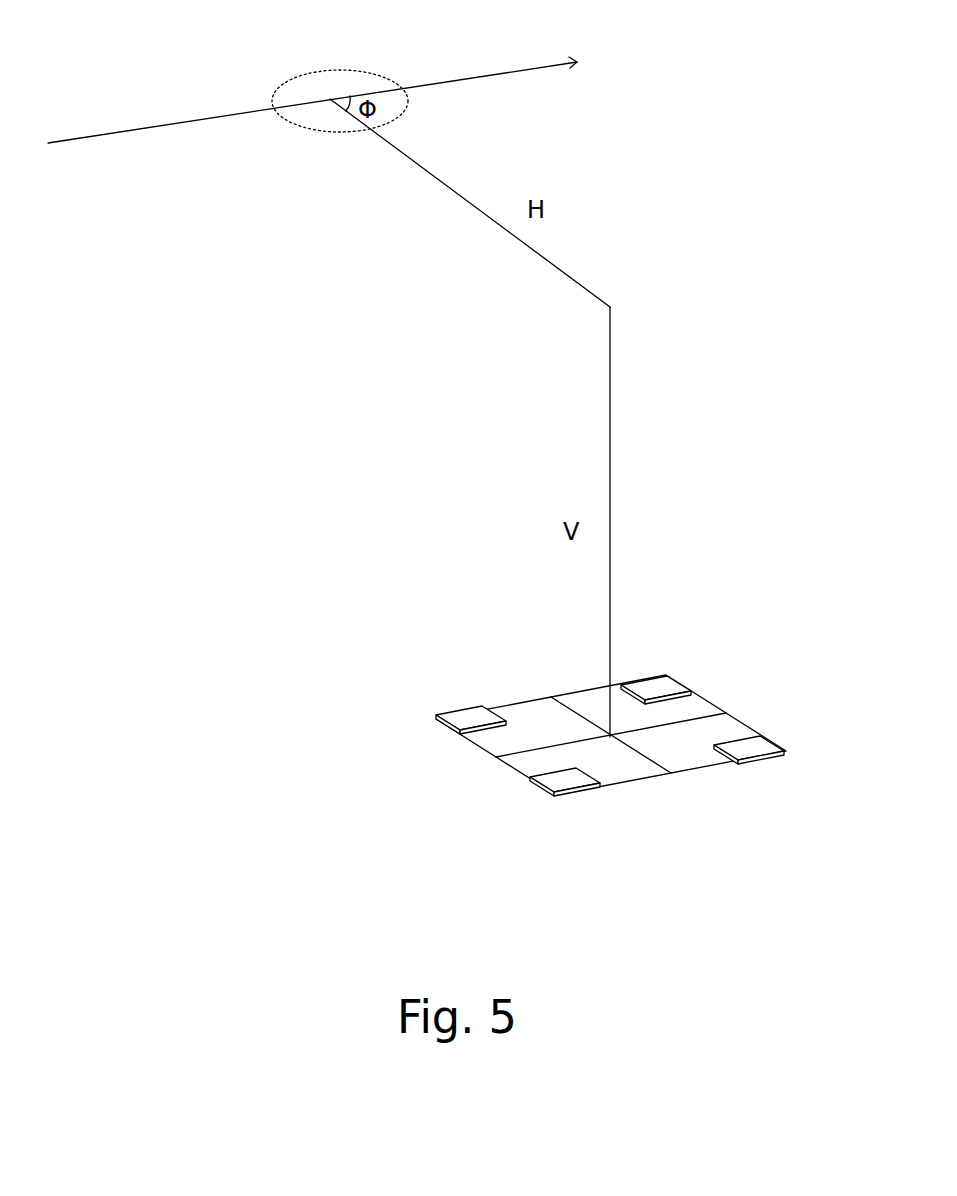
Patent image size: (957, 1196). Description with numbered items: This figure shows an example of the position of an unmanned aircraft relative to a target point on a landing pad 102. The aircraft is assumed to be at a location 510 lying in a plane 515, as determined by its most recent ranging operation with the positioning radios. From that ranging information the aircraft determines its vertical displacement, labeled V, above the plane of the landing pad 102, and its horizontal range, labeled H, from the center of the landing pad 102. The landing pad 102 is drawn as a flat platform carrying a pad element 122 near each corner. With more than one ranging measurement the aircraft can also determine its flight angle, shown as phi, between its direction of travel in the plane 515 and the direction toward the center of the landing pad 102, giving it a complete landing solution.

The aircraft location 510 is at (324, 86).
The plane 515 is at (398, 77).
The landing pad 102 is at (497, 759).
The contact pad 122 is at (785, 749).